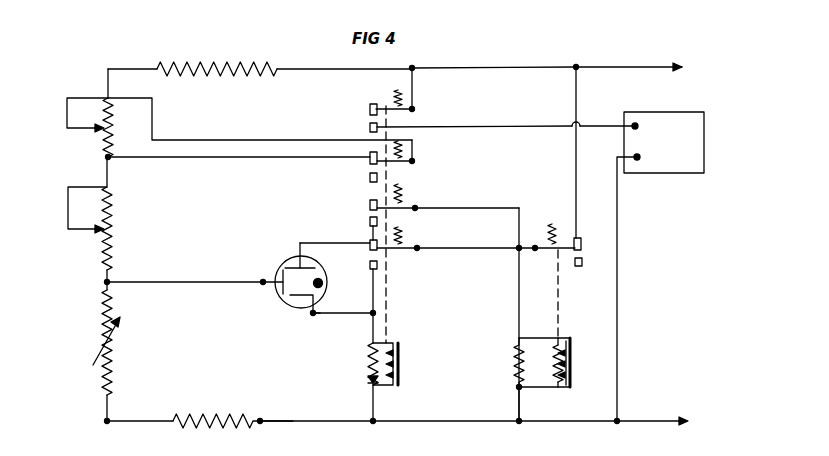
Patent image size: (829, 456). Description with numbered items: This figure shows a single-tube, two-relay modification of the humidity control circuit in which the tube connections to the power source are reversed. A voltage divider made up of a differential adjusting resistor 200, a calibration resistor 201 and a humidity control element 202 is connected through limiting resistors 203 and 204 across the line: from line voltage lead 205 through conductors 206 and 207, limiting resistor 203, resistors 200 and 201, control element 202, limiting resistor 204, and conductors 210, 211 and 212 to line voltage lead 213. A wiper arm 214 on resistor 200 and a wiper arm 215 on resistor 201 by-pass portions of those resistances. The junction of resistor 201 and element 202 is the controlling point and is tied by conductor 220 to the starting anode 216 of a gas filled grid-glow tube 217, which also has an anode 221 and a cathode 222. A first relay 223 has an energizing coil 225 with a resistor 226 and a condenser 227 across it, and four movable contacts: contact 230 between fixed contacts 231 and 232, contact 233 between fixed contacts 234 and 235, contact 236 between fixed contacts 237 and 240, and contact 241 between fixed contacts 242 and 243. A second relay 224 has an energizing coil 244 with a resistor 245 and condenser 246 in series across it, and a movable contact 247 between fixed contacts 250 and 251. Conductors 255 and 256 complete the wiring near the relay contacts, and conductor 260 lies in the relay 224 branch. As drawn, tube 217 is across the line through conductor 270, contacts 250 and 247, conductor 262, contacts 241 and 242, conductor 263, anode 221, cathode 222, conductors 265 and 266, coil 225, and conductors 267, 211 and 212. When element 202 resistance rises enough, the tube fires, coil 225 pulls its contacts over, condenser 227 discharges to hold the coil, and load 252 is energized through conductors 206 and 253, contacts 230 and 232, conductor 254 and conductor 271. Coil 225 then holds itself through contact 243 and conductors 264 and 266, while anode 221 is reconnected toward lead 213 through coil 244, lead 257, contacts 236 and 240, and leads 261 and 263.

The differential adjusting resistor 200 is at (103, 143).
The calibration resistor 201 is at (113, 218).
The control element 202 is at (101, 324).
The limiting resistor 203 is at (182, 62).
The limiting resistor 204 is at (213, 418).
The line voltage lead 205 is at (613, 66).
The conductor 206 is at (493, 66).
The conductor 207 is at (305, 66).
The conductor 210 is at (293, 420).
The conductor 211 is at (452, 420).
The conductor 212 is at (581, 422).
The line voltage lead 213 is at (645, 420).
The wiper arm 214 is at (67, 128).
The wiper arm 215 is at (70, 229).
The starting anode 216 is at (268, 281).
The grid-glow tube 217 is at (303, 282).
The conductor 220 is at (190, 282).
The anode 221 is at (312, 262).
The cathode 222 is at (311, 306).
The first relay 223 is at (455, 298).
The second relay 224 is at (559, 316).
The energizing coil 225 is at (378, 369).
The resistor 226 is at (366, 352).
The condenser 227 is at (370, 386).
The movable contact 230 is at (380, 102).
The fixed contact 231 is at (370, 105).
The fixed contact 232 is at (370, 127).
The movable contact 233 is at (396, 165).
The fixed contact 234 is at (370, 155).
The fixed contact 235 is at (370, 178).
The movable contact 236 is at (406, 202).
The fixed contact 237 is at (370, 203).
The fixed contact 240 is at (370, 221).
The movable contact 241 is at (413, 248).
The fixed contact 242 is at (370, 241).
The fixed contact 243 is at (370, 264).
The energizing coil 244 is at (568, 386).
The resistor 245 is at (515, 352).
The condenser 246 is at (517, 385).
The movable contact 247 is at (552, 232).
The fixed contact 250 is at (581, 240).
The fixed contact 251 is at (583, 262).
The load 252 is at (705, 112).
The conductor 253 is at (416, 78).
The conductor 254 is at (458, 128).
The conductor 255 is at (222, 138).
The conductor 256 is at (248, 158).
The lead 257 is at (494, 207).
The conductor 260 is at (521, 400).
The lead 261 is at (388, 232).
The conductor 262 is at (470, 251).
The conductor 263 is at (304, 241).
The conductor 264 is at (370, 290).
The conductor 265 is at (318, 315).
The conductor 266 is at (378, 336).
The conductor 267 is at (375, 403).
The conductor 270 is at (576, 165).
The conductor 271 is at (618, 192).